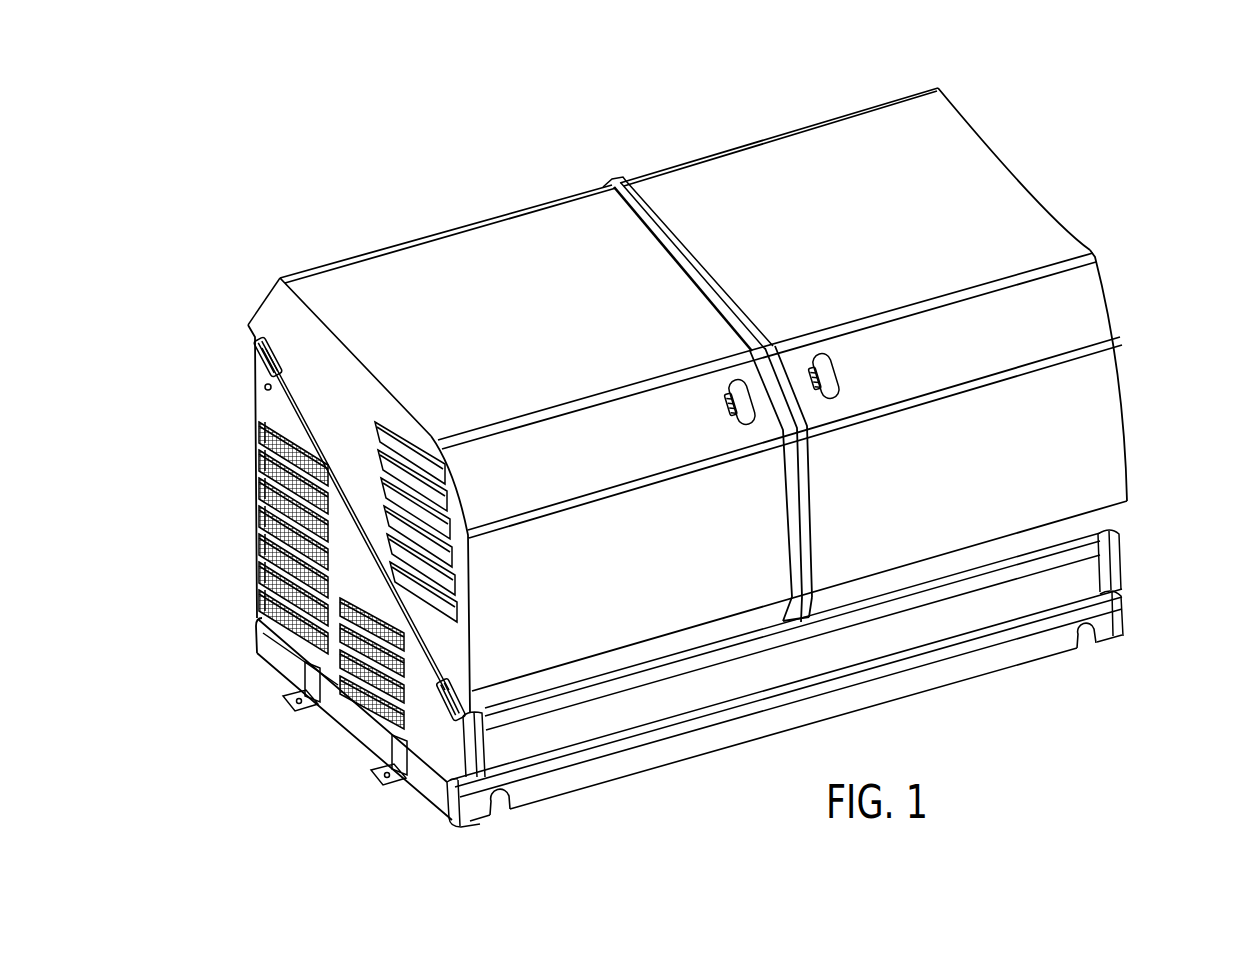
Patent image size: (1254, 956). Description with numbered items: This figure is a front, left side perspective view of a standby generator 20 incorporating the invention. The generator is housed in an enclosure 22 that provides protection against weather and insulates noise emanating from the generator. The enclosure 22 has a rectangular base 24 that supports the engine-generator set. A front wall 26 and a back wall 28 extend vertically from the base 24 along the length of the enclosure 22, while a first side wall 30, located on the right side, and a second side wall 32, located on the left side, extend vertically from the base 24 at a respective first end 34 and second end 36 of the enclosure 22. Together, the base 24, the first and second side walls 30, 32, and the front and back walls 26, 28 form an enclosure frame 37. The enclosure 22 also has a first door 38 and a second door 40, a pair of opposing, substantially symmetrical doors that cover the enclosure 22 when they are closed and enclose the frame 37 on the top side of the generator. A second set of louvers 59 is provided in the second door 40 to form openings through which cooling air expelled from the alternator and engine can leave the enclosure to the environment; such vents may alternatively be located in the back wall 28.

The standby generator 20 is at (968, 72).
The enclosure 22 is at (608, 150).
The rectangular base 24 is at (1108, 636).
The front wall 26 is at (1090, 577).
The back wall 28 is at (242, 471).
The first side wall 30 is at (1143, 406).
The second side wall 32 is at (438, 735).
The first end 34 is at (1165, 358).
The second end 36 is at (284, 739).
The enclosure frame 37 is at (225, 622).
The first door 38 is at (836, 227).
The second door 40 is at (515, 316).
The second set of louvers 59 is at (391, 428).